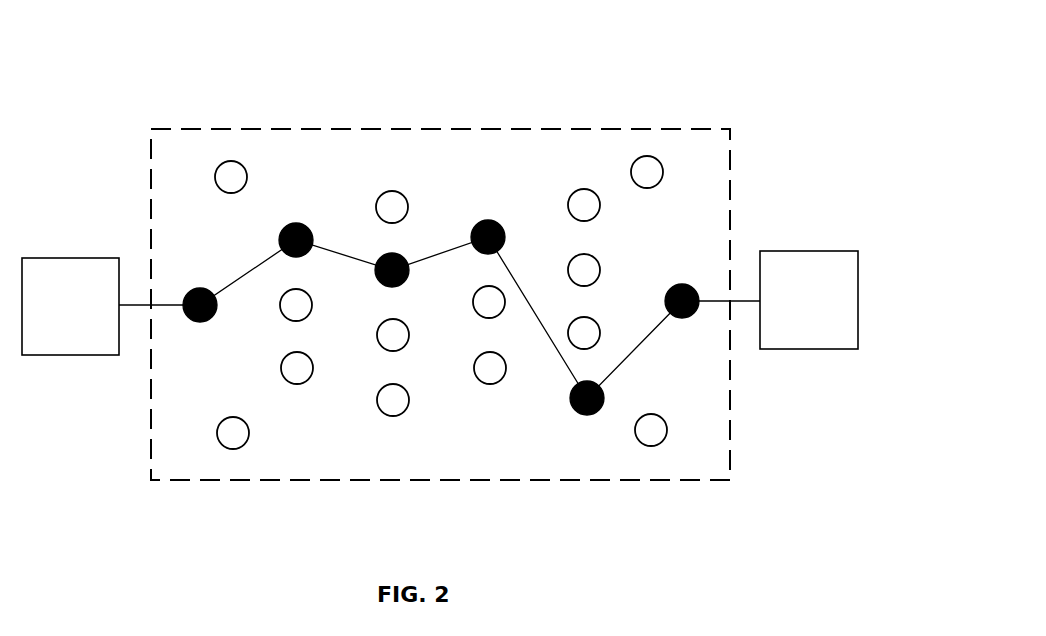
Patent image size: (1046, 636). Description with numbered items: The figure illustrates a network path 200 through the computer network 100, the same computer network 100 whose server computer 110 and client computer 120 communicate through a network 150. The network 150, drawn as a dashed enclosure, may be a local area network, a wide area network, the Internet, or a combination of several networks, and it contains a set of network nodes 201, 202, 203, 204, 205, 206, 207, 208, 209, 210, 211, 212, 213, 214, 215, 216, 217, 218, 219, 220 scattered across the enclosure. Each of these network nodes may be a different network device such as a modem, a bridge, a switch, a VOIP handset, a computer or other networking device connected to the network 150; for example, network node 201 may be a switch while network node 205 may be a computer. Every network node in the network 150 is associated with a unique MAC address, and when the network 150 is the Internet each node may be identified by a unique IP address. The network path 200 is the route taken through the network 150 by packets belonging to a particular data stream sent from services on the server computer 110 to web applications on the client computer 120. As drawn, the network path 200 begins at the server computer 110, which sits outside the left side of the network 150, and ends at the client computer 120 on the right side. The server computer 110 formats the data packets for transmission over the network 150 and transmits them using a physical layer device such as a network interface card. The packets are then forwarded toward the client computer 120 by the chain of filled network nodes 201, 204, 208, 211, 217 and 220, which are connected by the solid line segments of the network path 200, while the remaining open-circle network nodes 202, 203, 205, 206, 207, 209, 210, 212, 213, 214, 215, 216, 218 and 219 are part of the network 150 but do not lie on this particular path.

The computer network 100 is at (647, 90).
The server computer 110 is at (70, 306).
The client computer 120 is at (809, 300).
The network 150 is at (635, 481).
The network path 200 is at (243, 278).
The network node 201 is at (205, 288).
The network node 202 is at (247, 173).
The network node 203 is at (249, 437).
The network node 204 is at (298, 223).
The network node 205 is at (312, 309).
The network node 206 is at (313, 372).
The network node 207 is at (408, 203).
The network node 208 is at (386, 254).
The network node 209 is at (409, 339).
The network node 210 is at (409, 404).
The network node 211 is at (492, 220).
The network node 212 is at (473, 306).
The network node 213 is at (506, 372).
The network node 214 is at (580, 189).
The network node 215 is at (613, 255).
The network node 216 is at (613, 318).
The network node 217 is at (590, 415).
The network node 218 is at (663, 168).
The network node 219 is at (667, 434).
The network node 220 is at (686, 284).